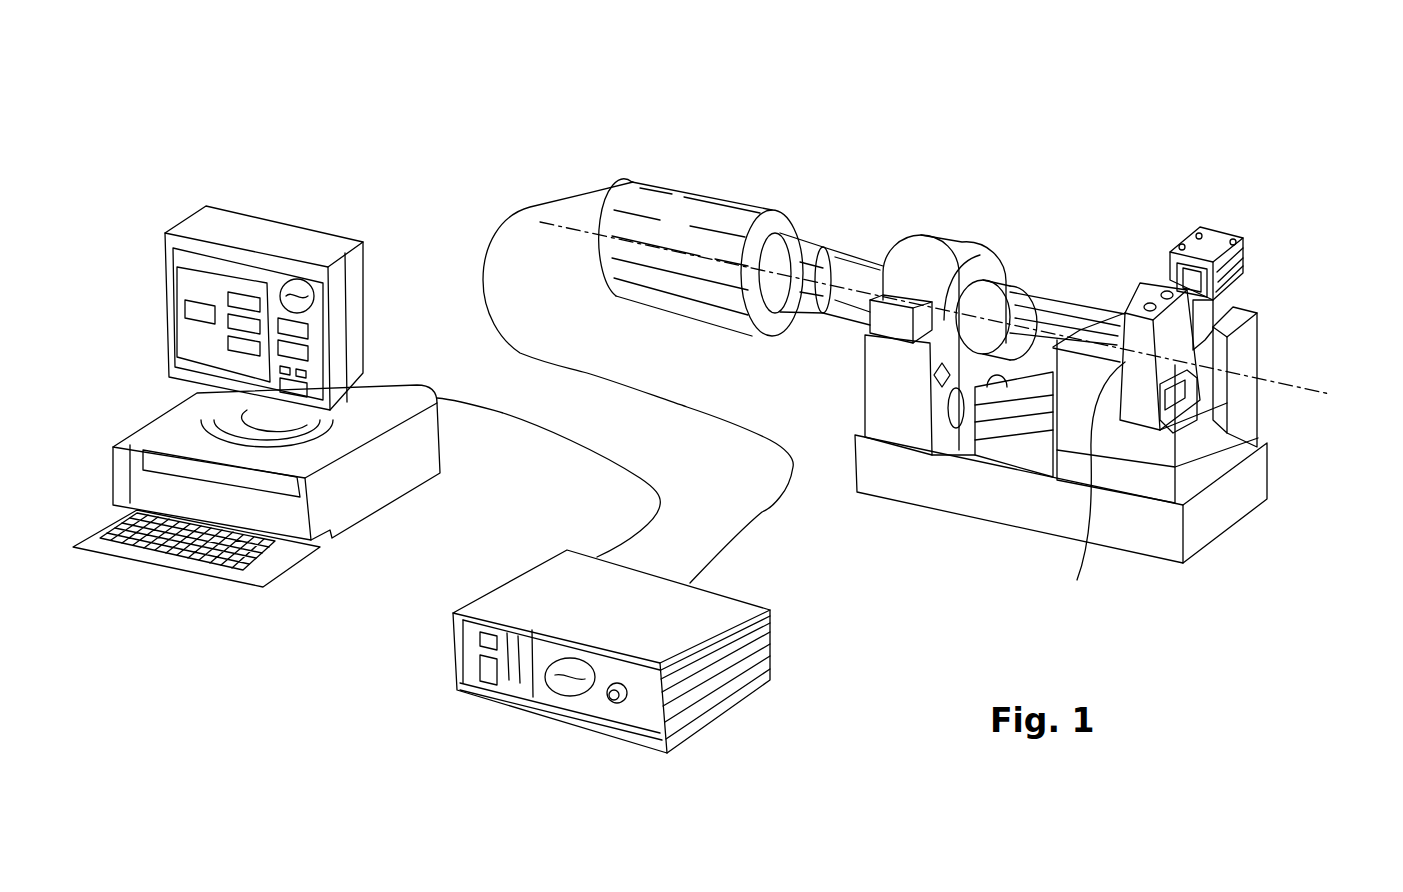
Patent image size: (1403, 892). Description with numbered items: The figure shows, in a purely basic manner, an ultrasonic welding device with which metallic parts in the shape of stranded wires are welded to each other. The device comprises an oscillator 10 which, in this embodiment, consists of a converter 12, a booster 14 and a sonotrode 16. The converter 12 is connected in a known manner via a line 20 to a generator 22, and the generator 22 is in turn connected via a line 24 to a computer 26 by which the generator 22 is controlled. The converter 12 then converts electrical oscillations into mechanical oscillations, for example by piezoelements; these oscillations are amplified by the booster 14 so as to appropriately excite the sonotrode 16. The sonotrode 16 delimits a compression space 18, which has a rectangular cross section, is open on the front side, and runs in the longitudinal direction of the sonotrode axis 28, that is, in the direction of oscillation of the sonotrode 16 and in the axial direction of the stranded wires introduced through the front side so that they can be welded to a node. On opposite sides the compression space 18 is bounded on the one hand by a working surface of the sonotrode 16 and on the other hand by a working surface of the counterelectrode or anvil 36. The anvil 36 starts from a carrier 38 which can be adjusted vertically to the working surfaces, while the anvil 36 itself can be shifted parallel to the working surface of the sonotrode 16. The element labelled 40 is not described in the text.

The oscillator 10 is at (955, 100).
The converter 12 is at (697, 220).
The booster 14 is at (987, 300).
The sonotrode 16 is at (1053, 317).
The compression space 18 is at (1283, 343).
The line 20 is at (762, 512).
The generator 22 is at (523, 597).
The line 24 is at (503, 413).
The computer 26 is at (173, 430).
The sonotrode axis 28 is at (1317, 393).
The anvil 36 is at (1203, 235).
The carrier 38 is at (1240, 337).
The sensor cable 40 is at (1093, 485).